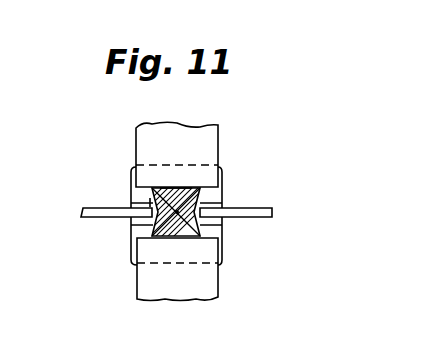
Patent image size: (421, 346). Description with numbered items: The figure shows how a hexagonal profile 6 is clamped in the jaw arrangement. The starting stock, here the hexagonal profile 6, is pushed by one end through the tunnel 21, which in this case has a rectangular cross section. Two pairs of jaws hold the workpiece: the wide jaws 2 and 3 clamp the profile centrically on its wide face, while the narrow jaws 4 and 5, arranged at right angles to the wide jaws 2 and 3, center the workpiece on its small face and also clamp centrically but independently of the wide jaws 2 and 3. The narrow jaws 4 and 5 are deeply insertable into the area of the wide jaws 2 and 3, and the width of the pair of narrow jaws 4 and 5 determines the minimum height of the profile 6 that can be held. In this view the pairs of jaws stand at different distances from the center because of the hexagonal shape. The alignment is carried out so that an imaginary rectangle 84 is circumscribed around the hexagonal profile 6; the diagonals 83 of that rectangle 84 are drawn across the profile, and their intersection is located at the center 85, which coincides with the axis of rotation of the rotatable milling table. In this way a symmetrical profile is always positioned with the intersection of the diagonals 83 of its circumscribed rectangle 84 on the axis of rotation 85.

The wide jaw 2 is at (158, 178).
The wide jaw 3 is at (150, 253).
The narrow jaw 4 is at (101, 208).
The narrow jaw 5 is at (240, 207).
The profile 6 is at (195, 228).
The tunnel 21 is at (225, 192).
The diagonals 83 is at (145, 240).
The imaginary rectangle 84 is at (150, 202).
The center 85 is at (173, 188).